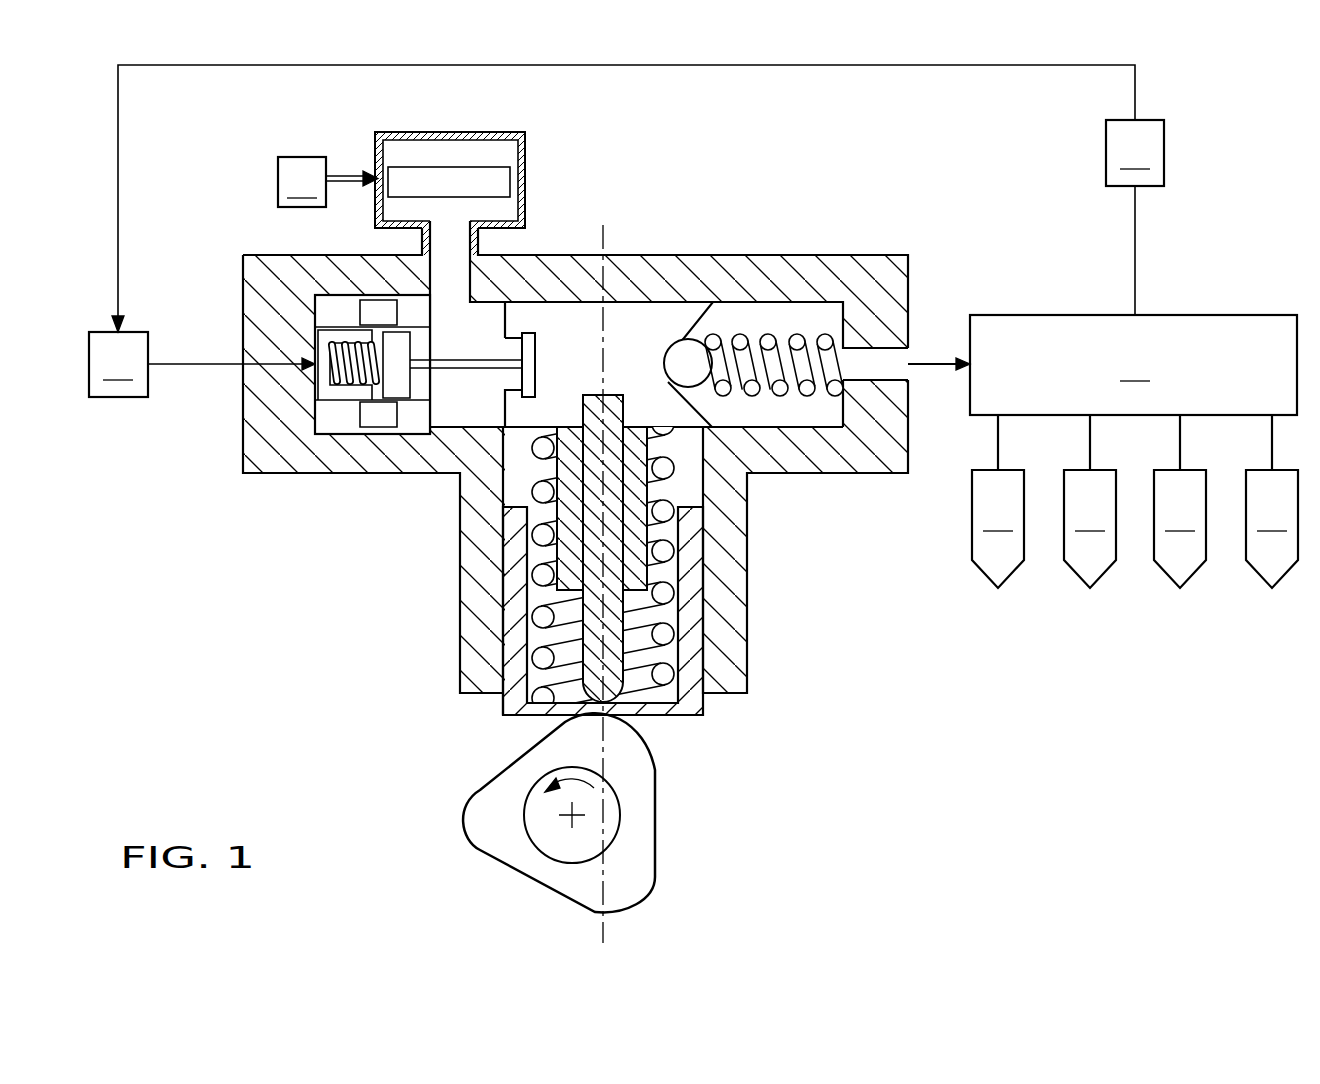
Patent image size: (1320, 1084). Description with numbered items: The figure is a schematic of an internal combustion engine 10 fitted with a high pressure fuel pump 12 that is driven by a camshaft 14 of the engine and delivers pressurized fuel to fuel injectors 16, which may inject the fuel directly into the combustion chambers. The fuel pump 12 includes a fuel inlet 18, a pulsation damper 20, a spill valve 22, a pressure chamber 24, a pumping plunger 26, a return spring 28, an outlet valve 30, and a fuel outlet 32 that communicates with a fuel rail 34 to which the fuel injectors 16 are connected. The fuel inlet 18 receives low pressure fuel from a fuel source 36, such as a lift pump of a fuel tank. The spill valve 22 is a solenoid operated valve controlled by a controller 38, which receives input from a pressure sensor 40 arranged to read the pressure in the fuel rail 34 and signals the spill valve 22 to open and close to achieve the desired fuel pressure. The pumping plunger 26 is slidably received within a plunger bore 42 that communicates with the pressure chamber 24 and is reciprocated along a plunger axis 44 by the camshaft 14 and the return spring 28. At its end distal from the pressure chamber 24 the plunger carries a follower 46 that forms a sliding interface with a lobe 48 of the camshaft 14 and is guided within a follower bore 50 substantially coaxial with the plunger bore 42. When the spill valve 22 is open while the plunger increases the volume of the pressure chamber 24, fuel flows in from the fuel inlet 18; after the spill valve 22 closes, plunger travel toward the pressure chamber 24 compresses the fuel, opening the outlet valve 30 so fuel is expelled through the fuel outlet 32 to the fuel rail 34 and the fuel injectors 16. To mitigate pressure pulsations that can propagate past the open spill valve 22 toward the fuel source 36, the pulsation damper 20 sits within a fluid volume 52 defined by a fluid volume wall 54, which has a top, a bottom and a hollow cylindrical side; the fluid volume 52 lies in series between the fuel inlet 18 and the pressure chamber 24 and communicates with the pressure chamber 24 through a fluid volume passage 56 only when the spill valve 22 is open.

The internal combustion engine 10 is at (830, 549).
The fuel pump 12 is at (770, 198).
The camshaft 14 is at (537, 805).
The fuel injectors 16 is at (1135, 501).
The fuel inlet 18 is at (374, 178).
The pulsation damper 20 is at (438, 172).
The spill valve 22 is at (528, 346).
The pressure chamber 24 is at (636, 320).
The pumping plunger 26 is at (590, 455).
The return spring 28 is at (546, 614).
The outlet valve 30 is at (688, 345).
The fuel outlet 32 is at (893, 367).
The fuel rail 34 is at (1133, 365).
The fuel source 36 is at (328, 182).
The controller 38 is at (612, 231).
The pressure sensor 40 is at (1135, 217).
The plunger bore 42 is at (592, 562).
The plunger axis 44 is at (605, 932).
The follower 46 is at (678, 716).
The lobe 48 is at (657, 853).
The follower bore 50 is at (497, 660).
The fluid volume 52 is at (490, 157).
The fluid volume wall 54 is at (525, 150).
The fluid volume passage 56 is at (443, 232).